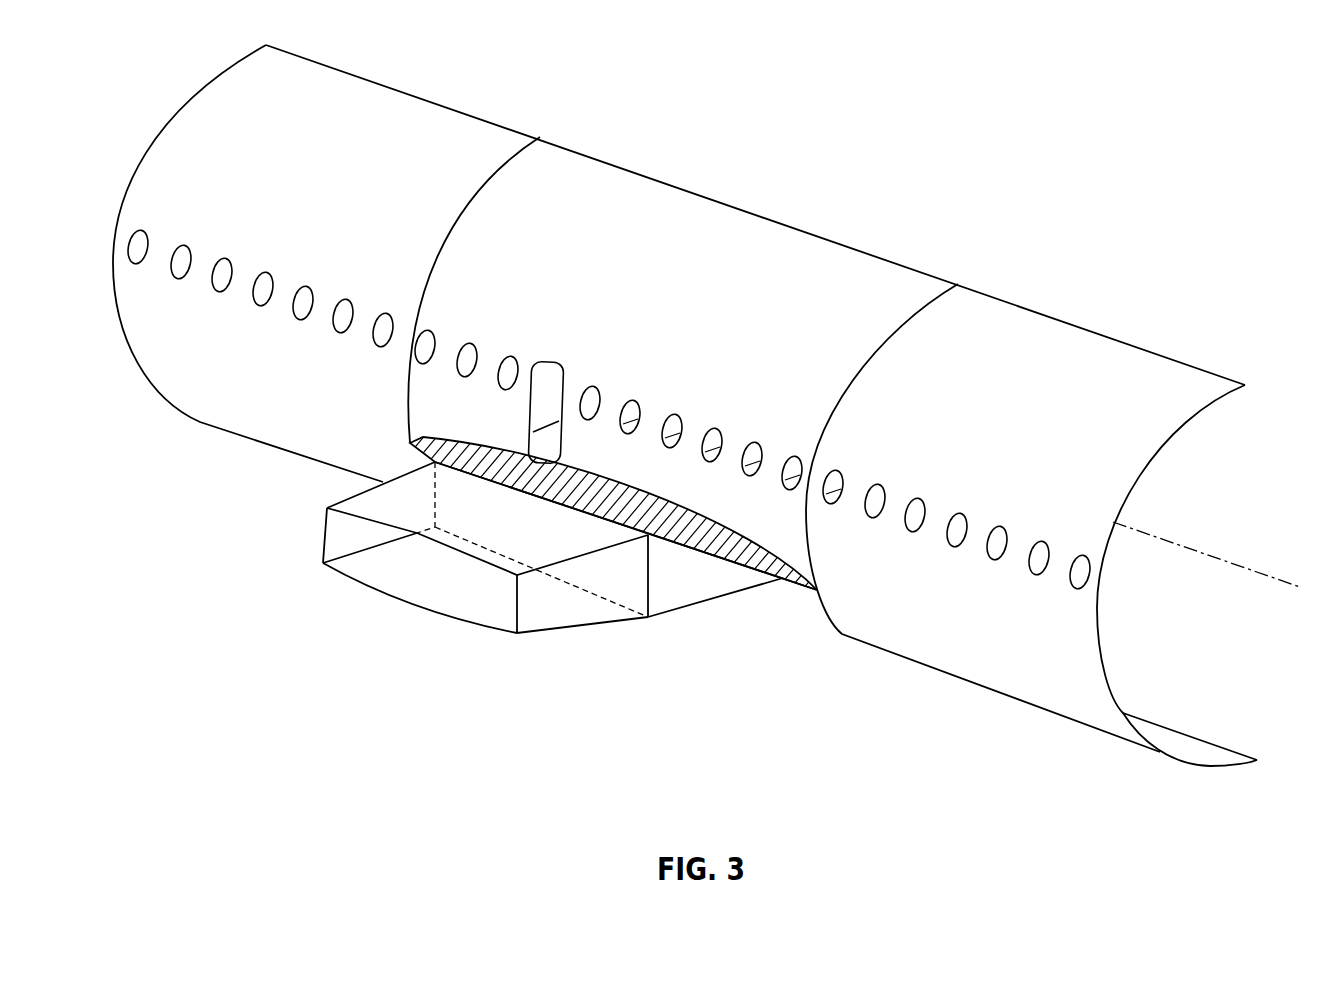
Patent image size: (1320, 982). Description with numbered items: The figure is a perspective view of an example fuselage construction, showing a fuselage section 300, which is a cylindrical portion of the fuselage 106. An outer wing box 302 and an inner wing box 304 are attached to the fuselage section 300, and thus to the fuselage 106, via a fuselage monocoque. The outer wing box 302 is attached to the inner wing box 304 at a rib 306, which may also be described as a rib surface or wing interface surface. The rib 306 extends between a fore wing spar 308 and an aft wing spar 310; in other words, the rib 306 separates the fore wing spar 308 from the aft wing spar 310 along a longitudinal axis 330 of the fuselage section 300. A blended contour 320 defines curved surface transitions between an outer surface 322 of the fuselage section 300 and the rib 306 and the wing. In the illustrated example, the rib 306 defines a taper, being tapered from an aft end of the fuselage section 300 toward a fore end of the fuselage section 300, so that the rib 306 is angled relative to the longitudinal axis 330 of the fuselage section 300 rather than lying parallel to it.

The fuselage 106 is at (1064, 134).
The fuselage section 300 is at (781, 131).
The outer surface 322 is at (645, 208).
The inner wing box 304 is at (684, 550).
The longitudinal axis 330 is at (1197, 551).
The blended contour 320 is at (743, 550).
The outer wing box 302 is at (299, 550).
The fore wing spar 308 is at (335, 507).
The rib 306 is at (548, 539).
The aft wing spar 310 is at (692, 582).